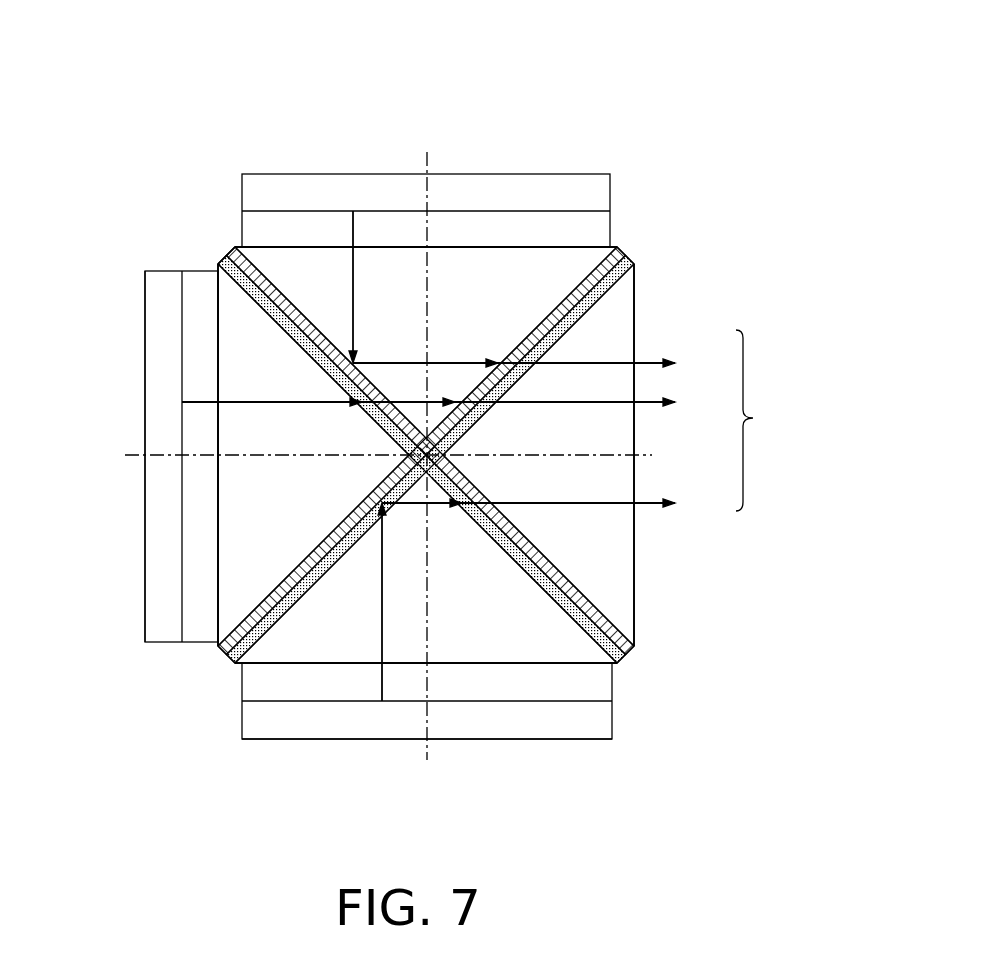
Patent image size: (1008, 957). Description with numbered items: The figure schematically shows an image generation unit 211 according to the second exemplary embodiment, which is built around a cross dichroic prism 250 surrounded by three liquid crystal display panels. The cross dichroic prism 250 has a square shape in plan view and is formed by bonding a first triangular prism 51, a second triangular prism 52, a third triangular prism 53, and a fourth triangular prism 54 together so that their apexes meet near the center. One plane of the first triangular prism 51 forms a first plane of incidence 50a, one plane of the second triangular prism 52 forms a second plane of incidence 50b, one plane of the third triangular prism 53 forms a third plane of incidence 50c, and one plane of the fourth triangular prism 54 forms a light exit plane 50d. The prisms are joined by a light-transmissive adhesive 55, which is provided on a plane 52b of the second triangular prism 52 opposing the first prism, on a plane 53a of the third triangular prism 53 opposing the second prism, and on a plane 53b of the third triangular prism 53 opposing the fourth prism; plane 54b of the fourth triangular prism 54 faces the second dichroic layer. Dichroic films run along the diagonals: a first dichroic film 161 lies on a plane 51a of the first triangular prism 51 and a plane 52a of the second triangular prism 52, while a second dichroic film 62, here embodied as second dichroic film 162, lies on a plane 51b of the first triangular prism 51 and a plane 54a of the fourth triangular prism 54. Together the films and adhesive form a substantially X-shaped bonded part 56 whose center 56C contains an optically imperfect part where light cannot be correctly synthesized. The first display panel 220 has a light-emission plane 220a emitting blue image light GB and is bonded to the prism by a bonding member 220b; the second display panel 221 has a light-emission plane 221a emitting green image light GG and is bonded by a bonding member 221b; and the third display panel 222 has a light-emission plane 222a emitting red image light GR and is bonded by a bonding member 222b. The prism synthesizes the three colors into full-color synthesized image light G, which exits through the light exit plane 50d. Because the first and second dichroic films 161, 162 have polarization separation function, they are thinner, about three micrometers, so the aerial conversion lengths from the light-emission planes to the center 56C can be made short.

The image generation unit 211 is at (690, 125).
The cross dichroic prism 250 is at (645, 282).
The bonded part 56 is at (214, 244).
The center of the bonded part 56C is at (410, 450).
The second dichroic film 62 is at (249, 263).
The first dichroic film 161 is at (237, 626).
The second dichroic film 162 is at (625, 652).
The light-transmissive adhesive 55 is at (597, 665).
The first triangular prism 51 is at (327, 262).
The plane of the first triangular prism 51a is at (557, 303).
The plane of the first triangular prism 51b is at (267, 308).
The second triangular prism 52 is at (230, 558).
The plane of the second triangular prism 52a is at (240, 612).
The plane of the second triangular prism 52b is at (262, 310).
The third triangular prism 53 is at (500, 665).
The plane of the third triangular prism 53a is at (293, 665).
The plane of the third triangular prism 53b is at (578, 665).
The fourth triangular prism 54 is at (613, 530).
The plane of the fourth triangular prism 54a is at (593, 608).
The plane of the fourth triangular prism 54b is at (610, 290).
The first plane of incidence 50a is at (465, 247).
The second plane of incidence 50b is at (218, 483).
The third plane of incidence 50c is at (393, 666).
The light exit plane 50d is at (634, 560).
The first display panel 220 is at (208, 198).
The light-emission plane 220a is at (394, 205).
The bonding member 220b is at (573, 232).
The second display panel 221 is at (168, 692).
The light-emission plane 221a is at (183, 522).
The bonding member 221b is at (200, 293).
The third display panel 222 is at (662, 716).
The light-emission plane 222a is at (456, 700).
The bonding member 222b is at (257, 688).
The blue image light GB is at (650, 366).
The green image light GG is at (650, 402).
The red image light GR is at (650, 501).
The synthesized image light G is at (757, 420).